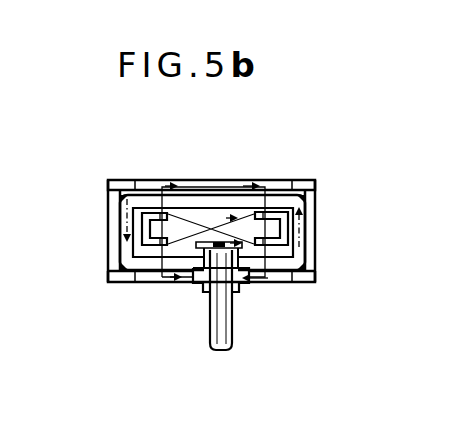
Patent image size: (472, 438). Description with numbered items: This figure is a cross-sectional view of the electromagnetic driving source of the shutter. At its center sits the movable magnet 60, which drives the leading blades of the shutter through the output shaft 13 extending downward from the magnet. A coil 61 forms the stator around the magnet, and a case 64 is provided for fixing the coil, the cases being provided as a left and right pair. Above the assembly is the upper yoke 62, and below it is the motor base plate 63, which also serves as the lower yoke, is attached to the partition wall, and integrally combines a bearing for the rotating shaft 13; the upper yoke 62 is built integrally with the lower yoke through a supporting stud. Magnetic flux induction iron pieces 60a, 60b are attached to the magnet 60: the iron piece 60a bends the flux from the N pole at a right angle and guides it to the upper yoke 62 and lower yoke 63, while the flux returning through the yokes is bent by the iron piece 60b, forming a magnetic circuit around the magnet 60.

The output shaft 13 is at (222, 312).
The movable magnet 60 is at (212, 222).
The magnetic flux induction iron piece 60a is at (143, 244).
The magnetic flux induction iron piece 60b is at (280, 242).
The coil 61 is at (298, 201).
The upper yoke 62 is at (274, 184).
The motor base plate 63 is at (150, 281).
The case 64 is at (113, 228).